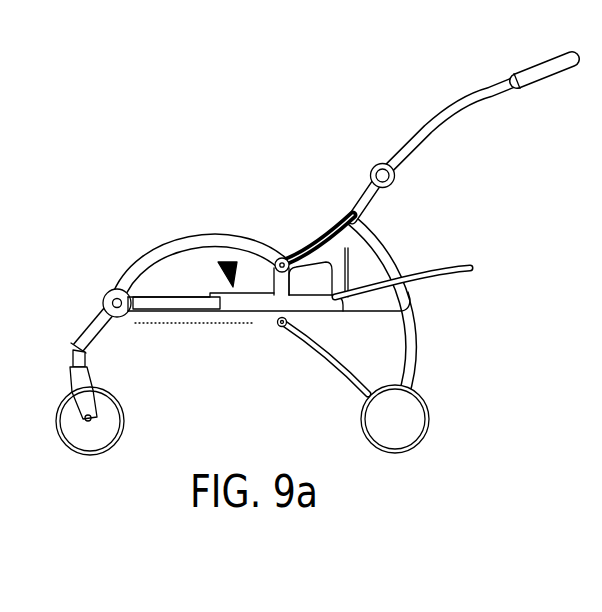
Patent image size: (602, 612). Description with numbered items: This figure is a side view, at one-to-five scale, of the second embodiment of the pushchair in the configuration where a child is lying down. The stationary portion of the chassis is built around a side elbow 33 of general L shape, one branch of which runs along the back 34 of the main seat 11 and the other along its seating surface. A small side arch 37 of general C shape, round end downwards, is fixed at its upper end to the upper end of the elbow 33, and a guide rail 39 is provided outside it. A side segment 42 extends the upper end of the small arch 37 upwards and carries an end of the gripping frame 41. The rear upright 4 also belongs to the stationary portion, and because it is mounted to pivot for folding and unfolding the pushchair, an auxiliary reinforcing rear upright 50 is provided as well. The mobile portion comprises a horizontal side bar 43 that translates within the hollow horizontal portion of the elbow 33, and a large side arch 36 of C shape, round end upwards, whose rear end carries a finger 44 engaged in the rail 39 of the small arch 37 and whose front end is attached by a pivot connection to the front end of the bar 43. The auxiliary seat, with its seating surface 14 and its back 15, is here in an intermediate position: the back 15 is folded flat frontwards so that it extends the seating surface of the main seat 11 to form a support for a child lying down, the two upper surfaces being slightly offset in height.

The rear upright 4 is at (419, 355).
The main seat 11 is at (221, 258).
The seating surface 14 is at (148, 320).
The back 15 is at (167, 297).
The side elbow 33 is at (337, 310).
The back of the main seat 34 is at (460, 262).
The large side arch 36 is at (133, 262).
The small side arch 37 is at (373, 237).
The guide rail 39 is at (330, 233).
The gripping frame 41 is at (538, 78).
The side segment 42 is at (365, 192).
The horizontal side bar 43 is at (183, 311).
The finger 44 is at (279, 258).
The auxiliary reinforcing rear upright 50 is at (320, 356).